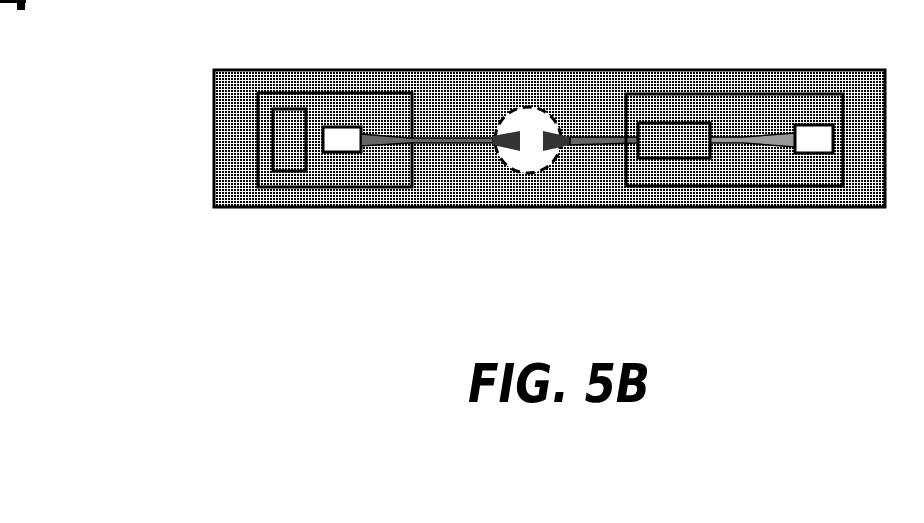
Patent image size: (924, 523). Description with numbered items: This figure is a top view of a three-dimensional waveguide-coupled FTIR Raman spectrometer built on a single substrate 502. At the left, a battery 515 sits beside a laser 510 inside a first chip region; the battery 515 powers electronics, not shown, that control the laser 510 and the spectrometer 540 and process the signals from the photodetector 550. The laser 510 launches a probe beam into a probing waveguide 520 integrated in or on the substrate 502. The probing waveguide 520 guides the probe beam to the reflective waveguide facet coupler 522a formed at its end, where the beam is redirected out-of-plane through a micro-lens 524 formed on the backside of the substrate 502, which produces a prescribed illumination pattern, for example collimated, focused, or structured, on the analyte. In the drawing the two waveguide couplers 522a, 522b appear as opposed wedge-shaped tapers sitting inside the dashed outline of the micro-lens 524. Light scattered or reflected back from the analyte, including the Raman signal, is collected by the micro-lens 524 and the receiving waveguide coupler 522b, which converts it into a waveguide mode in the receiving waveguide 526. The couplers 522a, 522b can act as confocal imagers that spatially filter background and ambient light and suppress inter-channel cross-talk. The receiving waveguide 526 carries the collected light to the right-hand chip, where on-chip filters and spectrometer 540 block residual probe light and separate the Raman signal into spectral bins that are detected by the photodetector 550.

The substrate 502 is at (294, 204).
The laser 510 is at (345, 109).
The battery 515 is at (288, 94).
The probing waveguide 520 is at (438, 157).
The reflective waveguide facet coupler 522a is at (511, 122).
The receiving waveguide coupler 522b is at (545, 121).
The micro-lens 524 is at (525, 184).
The receiving waveguide 526 is at (614, 157).
The on-chip filters and spectrometer 540 is at (711, 170).
The photodetector 550 is at (814, 101).